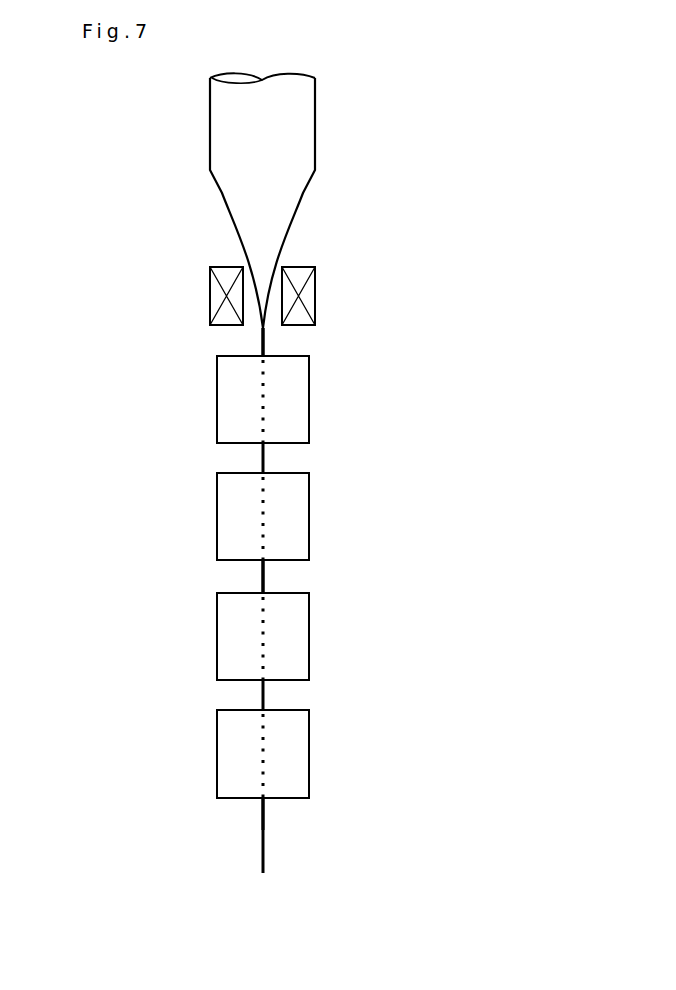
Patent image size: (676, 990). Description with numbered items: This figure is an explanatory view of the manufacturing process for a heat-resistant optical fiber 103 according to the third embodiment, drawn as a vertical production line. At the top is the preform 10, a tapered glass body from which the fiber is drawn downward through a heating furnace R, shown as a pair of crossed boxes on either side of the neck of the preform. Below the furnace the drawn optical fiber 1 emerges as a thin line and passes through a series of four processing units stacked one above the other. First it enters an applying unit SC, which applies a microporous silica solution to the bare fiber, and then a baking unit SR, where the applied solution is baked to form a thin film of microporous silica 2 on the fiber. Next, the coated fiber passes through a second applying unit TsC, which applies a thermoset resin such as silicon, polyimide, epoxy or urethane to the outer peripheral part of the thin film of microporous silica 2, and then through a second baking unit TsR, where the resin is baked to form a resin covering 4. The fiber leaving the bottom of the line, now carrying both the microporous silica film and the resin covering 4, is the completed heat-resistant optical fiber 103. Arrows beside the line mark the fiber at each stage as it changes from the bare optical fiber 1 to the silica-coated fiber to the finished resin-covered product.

The preform 10 is at (223, 110).
The heating furnace R is at (210, 298).
The optical fiber 1 is at (282, 348).
The applying unit for applying the microporous silica solution SC is at (225, 412).
The baking unit SR is at (225, 535).
The thin film of microporous silica 2 is at (282, 581).
The applying unit for applying the thermoset resin TsC is at (225, 650).
The baking unit TsR is at (225, 773).
The resin covering 4 is at (282, 821).
The heat-resistant optical fiber 103 is at (262, 855).